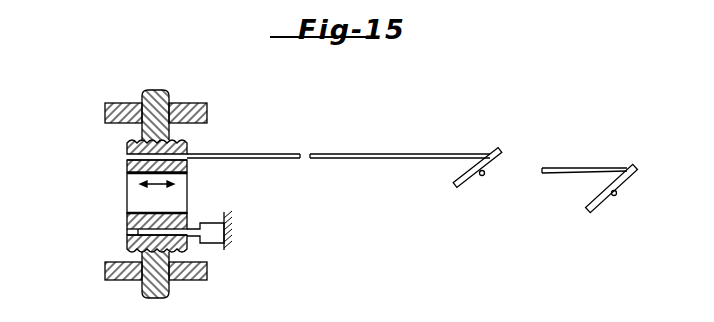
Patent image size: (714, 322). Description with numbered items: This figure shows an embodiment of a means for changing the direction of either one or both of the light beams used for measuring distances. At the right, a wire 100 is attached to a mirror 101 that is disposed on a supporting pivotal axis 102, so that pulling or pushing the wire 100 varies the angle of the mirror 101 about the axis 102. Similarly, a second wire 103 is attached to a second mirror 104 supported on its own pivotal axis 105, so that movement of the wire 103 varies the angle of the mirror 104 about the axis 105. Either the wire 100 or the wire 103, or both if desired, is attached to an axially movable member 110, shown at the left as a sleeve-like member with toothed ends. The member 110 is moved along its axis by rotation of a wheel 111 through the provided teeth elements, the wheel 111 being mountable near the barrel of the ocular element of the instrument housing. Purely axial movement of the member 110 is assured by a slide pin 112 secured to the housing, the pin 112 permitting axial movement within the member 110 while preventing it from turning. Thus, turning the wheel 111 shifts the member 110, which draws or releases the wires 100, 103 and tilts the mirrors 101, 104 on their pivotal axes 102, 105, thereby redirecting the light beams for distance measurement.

The wire means 100 is at (575, 168).
The mirror 101 is at (628, 166).
The supporting pivotal axis 102 is at (614, 196).
The wire means 103 is at (367, 154).
The mirror 104 is at (492, 148).
The pivotal axis 105 is at (481, 178).
The axially movable member 110 is at (188, 159).
The wheel 111 is at (168, 100).
The slide pin 112 is at (212, 238).